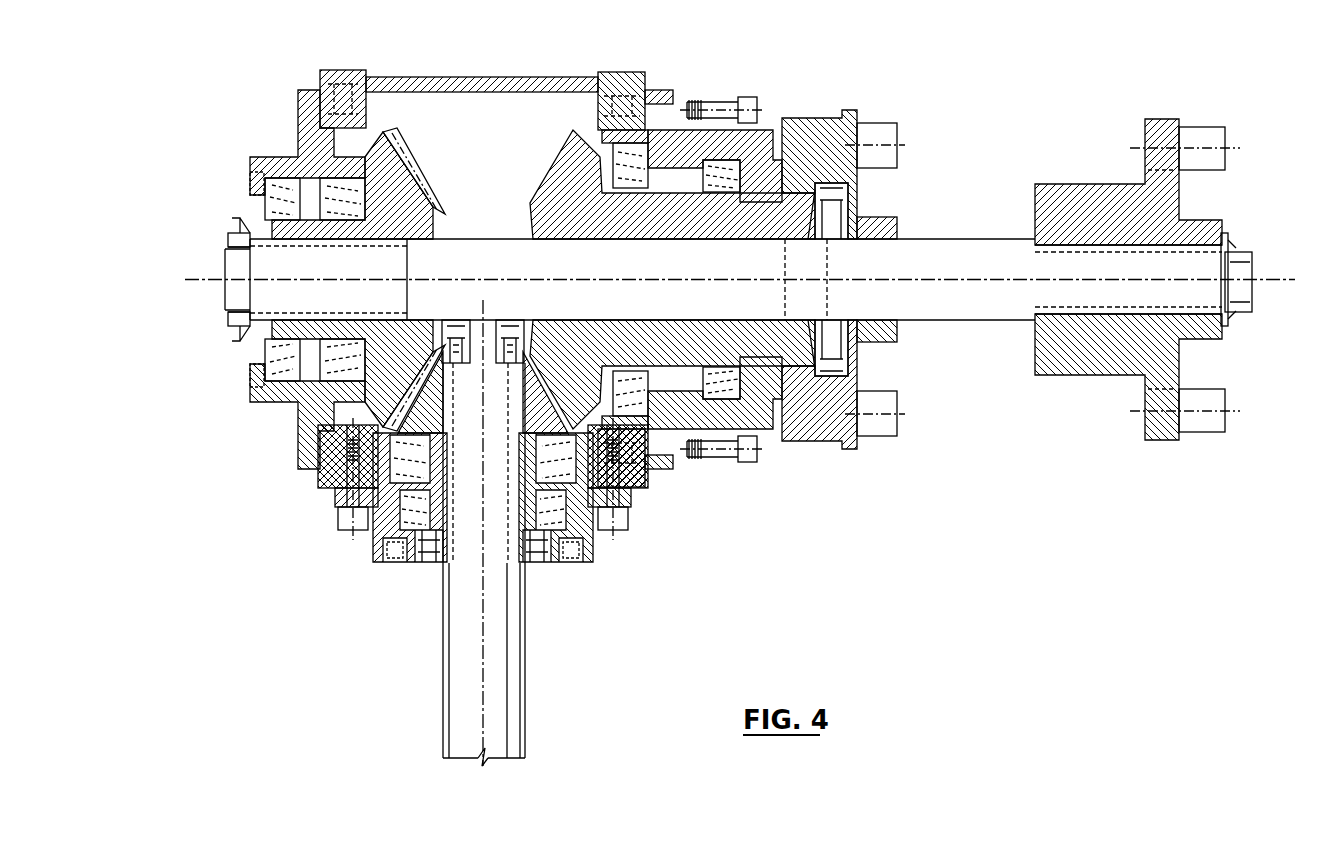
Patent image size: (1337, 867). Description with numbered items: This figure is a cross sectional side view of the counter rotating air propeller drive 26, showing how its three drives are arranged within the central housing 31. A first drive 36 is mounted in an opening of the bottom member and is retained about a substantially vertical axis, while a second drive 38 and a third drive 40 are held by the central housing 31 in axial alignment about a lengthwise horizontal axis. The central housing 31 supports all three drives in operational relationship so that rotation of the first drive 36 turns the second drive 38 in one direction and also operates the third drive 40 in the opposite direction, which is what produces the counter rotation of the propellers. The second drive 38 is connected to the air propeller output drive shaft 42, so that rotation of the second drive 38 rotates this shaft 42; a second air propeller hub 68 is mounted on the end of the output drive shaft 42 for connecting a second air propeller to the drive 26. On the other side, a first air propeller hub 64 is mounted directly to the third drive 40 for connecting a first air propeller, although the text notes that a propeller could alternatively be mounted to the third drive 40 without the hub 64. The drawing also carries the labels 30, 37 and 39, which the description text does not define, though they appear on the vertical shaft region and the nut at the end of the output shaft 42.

The counter rotating air propeller drive 26 is at (702, 38).
The pinion shaft 30 is at (527, 707).
The central housing 31 is at (481, 77).
The first drive 36 is at (602, 570).
The nut 37 is at (1262, 280).
The second drive 38 is at (266, 411).
The pinion axis 39 is at (486, 655).
The third drive 40 is at (767, 88).
The air propeller output drive shaft 42 is at (962, 239).
The first air propeller hub 64 is at (827, 97).
The second air propeller hub 68 is at (1160, 118).